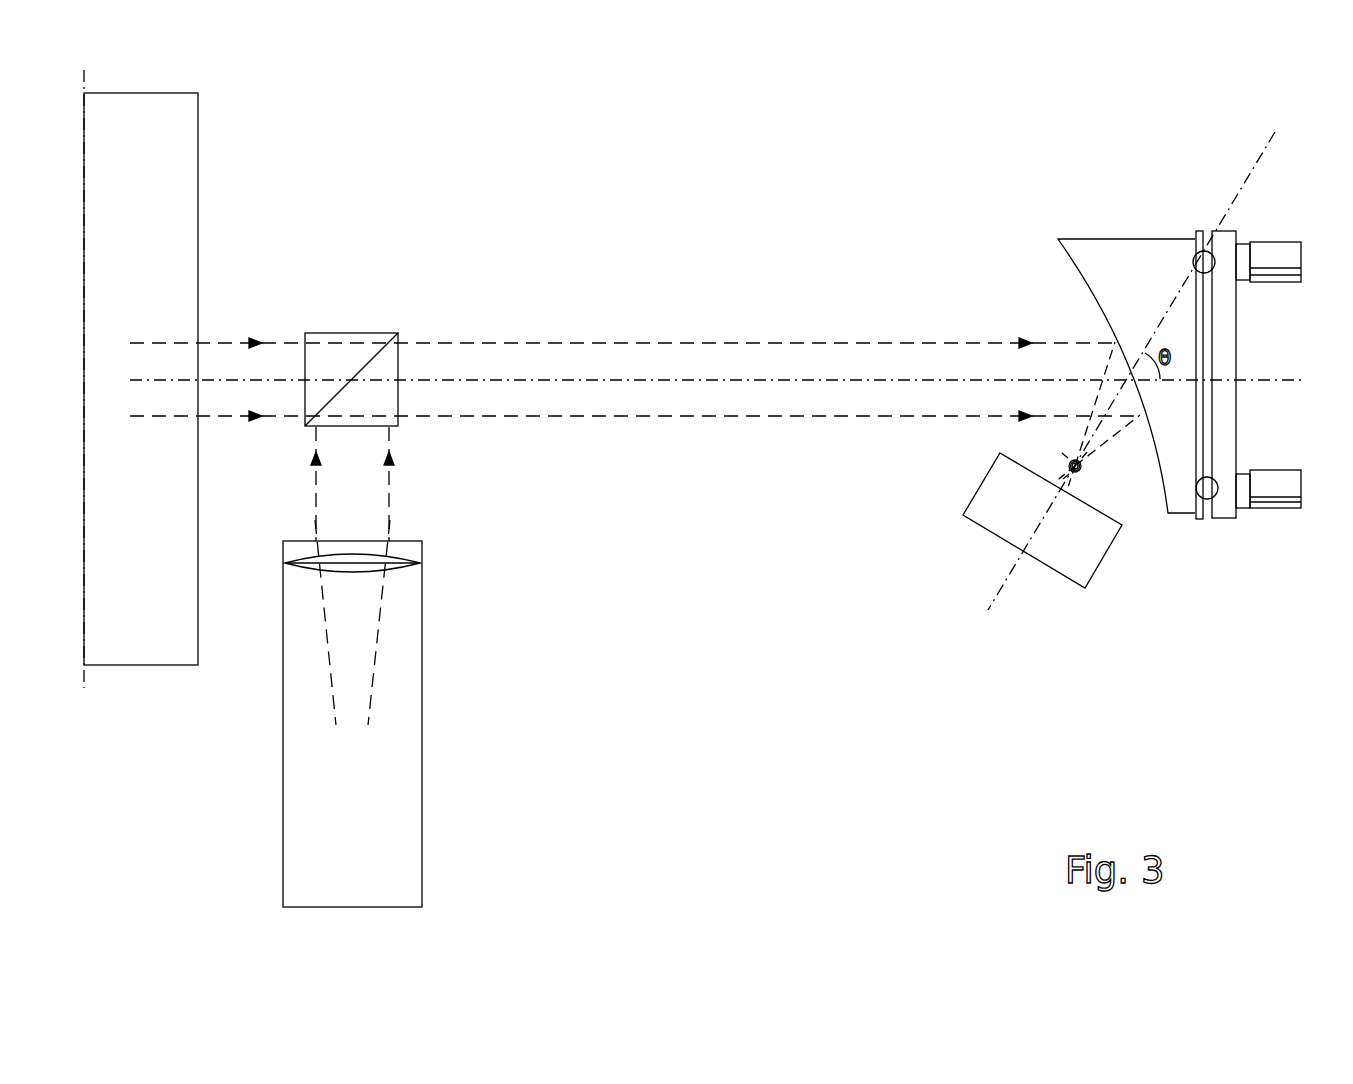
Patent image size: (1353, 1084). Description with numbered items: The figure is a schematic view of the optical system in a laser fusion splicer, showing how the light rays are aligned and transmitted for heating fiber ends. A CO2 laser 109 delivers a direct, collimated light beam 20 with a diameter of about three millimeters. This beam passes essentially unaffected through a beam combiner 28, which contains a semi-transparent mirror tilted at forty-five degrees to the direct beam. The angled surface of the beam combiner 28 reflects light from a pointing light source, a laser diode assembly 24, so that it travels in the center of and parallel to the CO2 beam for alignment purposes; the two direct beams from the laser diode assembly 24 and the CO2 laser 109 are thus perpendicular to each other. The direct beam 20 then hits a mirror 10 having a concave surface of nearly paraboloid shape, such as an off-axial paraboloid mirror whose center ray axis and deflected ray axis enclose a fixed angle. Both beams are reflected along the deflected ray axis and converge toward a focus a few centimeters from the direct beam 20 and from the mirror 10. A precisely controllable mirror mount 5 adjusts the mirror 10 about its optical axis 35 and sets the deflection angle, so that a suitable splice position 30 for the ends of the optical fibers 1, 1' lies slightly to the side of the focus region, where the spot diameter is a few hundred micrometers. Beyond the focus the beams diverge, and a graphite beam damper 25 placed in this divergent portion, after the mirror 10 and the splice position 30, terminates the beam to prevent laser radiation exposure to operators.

The CO2 laser 109 is at (198, 200).
The direct collimated light beam 20 is at (222, 348).
The beam combiner 28 is at (381, 334).
The laser diode assembly 24 is at (422, 729).
The mirror 10 is at (1097, 241).
The mirror mount 5 is at (1232, 430).
The optical axis 35 is at (1248, 186).
The splice position 30 is at (1082, 466).
The optical fiber 1 is at (1060, 462).
The optical fiber 1' is at (1091, 484).
The graphite beam damper 25 is at (983, 495).